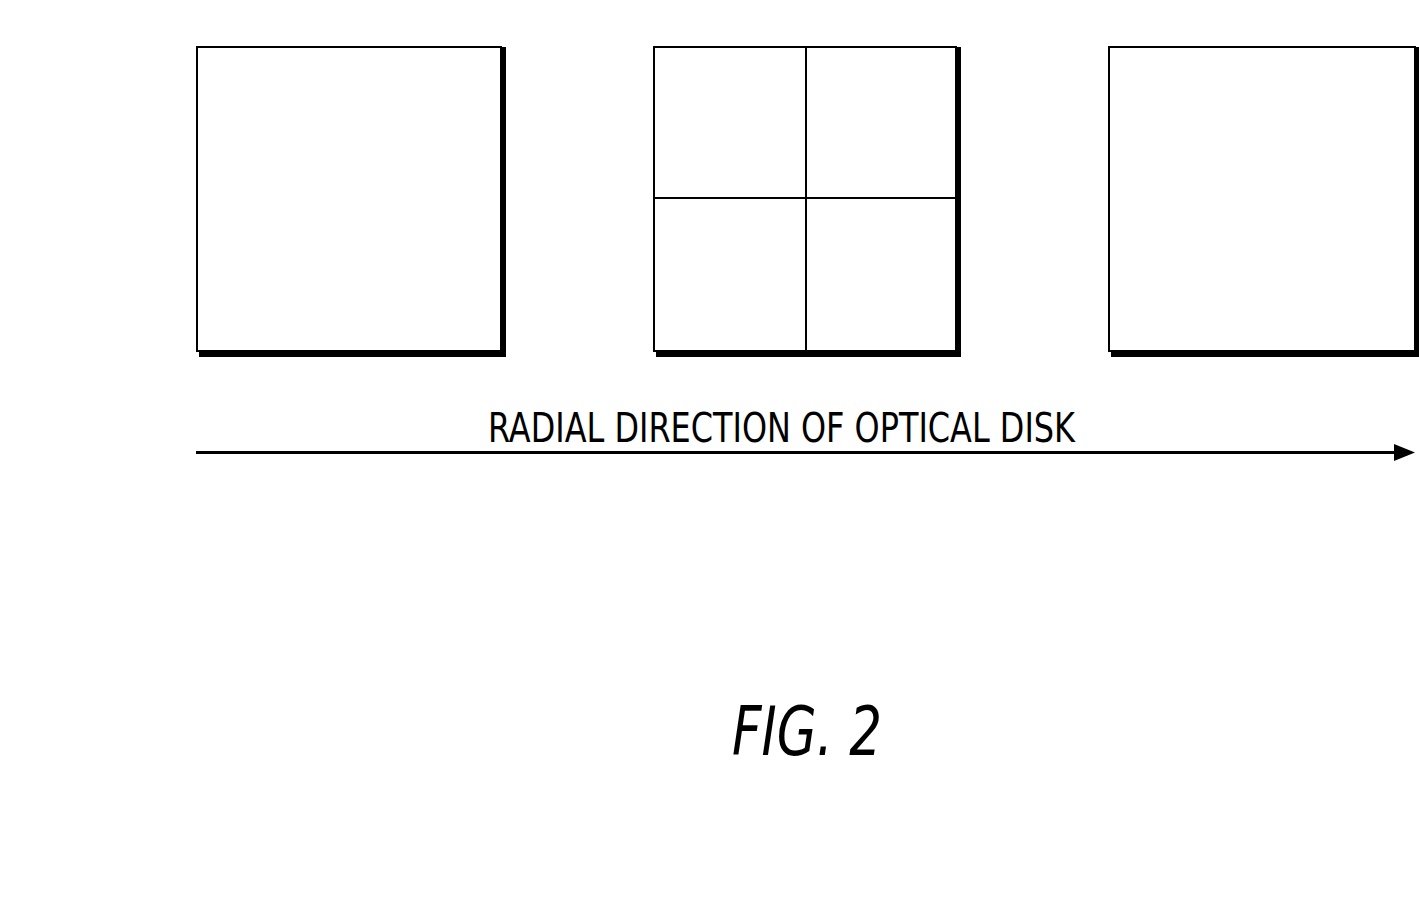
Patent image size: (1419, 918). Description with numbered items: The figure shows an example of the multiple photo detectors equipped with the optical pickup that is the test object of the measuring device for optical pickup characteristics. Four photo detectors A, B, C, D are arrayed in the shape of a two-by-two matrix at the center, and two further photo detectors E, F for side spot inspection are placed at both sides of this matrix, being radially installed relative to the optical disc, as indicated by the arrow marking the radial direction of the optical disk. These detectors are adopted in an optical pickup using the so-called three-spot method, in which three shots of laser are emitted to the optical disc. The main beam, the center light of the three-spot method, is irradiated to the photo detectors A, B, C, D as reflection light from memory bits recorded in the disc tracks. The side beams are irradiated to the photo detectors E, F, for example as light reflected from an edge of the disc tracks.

The photo detector A is at (730, 122).
The photo detector B is at (881, 122).
The photo detector C is at (881, 274).
The photo detector D is at (730, 274).
The photo detector E is at (351, 202).
The photo detector F is at (1264, 202).